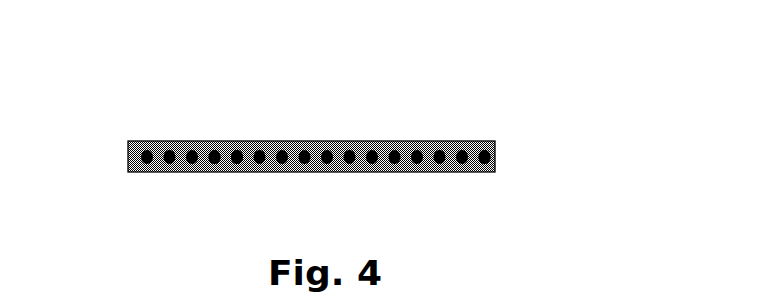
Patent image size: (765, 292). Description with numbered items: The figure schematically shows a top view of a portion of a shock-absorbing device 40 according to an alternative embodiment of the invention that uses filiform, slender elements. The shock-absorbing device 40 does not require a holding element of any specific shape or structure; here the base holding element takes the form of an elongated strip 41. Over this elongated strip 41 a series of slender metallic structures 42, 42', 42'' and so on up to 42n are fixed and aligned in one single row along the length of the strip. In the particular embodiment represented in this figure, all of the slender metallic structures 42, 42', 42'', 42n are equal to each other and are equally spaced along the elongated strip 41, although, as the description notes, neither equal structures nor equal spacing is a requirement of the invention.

The shock-absorbing device 40 is at (537, 138).
The elongated strip 41 is at (128, 152).
The slender metallic structure 42 is at (316, 102).
The slender metallic structure 42' is at (171, 193).
The slender metallic structure 42'' is at (280, 110).
The slender metallic structure 42n is at (481, 165).